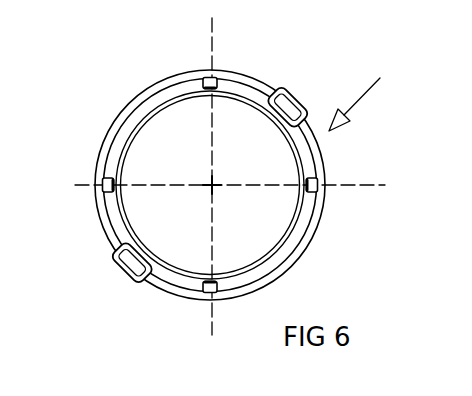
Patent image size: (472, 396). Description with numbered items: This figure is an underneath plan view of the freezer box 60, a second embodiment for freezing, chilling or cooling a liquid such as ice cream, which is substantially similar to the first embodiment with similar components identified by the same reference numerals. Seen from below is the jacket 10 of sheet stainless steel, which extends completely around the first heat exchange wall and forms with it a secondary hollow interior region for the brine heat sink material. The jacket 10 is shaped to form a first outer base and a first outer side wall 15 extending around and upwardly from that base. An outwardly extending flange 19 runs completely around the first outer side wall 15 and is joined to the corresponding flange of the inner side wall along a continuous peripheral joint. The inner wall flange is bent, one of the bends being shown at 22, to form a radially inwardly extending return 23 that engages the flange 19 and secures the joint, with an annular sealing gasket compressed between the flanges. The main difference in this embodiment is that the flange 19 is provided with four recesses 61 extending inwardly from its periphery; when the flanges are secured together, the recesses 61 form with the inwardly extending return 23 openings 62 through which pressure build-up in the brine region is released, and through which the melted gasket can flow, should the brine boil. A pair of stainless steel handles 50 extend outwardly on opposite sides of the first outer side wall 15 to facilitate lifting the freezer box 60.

The jacket 10 is at (142, 163).
The first outer side wall 15 is at (148, 147).
The flange 19 is at (268, 259).
The bend 22 is at (320, 232).
The radially inwardly extending return 23 is at (153, 84).
The handles 50 is at (300, 90).
The freezer box 60 is at (354, 104).
The recesses 61 is at (216, 79).
The openings 62 is at (222, 80).